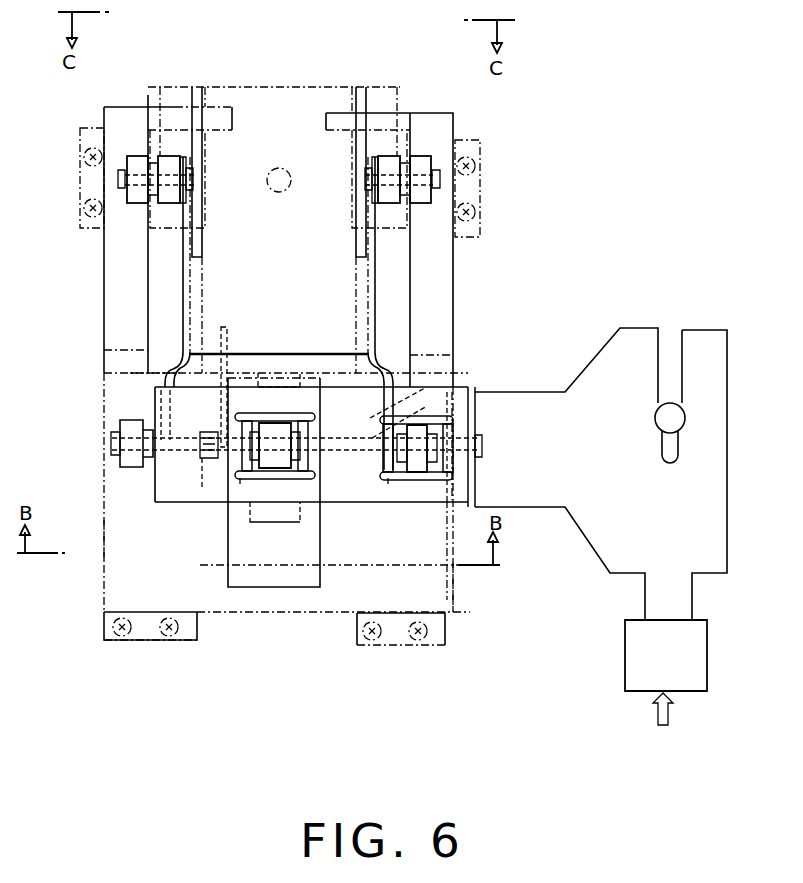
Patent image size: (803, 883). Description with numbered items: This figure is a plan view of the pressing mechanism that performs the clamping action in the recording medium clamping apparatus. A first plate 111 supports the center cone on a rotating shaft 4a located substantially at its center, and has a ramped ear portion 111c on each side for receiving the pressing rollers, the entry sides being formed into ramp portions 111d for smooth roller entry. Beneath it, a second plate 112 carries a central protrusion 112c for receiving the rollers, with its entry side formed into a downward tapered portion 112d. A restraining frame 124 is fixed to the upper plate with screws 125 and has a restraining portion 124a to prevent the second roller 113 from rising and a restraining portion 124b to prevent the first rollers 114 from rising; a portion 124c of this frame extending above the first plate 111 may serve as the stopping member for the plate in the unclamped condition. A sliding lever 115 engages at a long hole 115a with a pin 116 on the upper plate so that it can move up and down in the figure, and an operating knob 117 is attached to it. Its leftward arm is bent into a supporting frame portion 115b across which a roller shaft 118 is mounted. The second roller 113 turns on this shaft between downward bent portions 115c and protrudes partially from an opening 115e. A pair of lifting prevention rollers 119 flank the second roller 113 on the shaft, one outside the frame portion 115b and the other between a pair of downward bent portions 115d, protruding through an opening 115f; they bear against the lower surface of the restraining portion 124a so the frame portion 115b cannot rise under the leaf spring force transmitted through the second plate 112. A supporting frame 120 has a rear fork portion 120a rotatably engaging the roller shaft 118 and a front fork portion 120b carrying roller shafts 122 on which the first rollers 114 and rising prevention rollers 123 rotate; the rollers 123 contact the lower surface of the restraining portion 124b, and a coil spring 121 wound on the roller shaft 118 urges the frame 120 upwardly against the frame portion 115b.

The restraining frame 124 is at (314, 613).
The restraining portion 124a is at (106, 538).
The restraining portion 124b is at (106, 280).
The stopping member portion of restraining frame 124c is at (202, 70).
The screw 125 is at (83, 153).
The first plate 111 is at (311, 90).
The ramped ear portion 111c is at (391, 100).
The ramp portion 111d is at (162, 215).
The rising prevention roller 123 is at (138, 155).
The first roller 114 is at (159, 163).
The roller shaft 122 is at (192, 176).
The front fork portion 120b is at (190, 212).
The supporting frame 120 is at (358, 313).
The rear fork portion 120a is at (158, 397).
The rotating shaft 4a is at (278, 168).
The coil spring 121 is at (229, 329).
The second plate 112 is at (350, 567).
The protrusion 112c is at (272, 371).
The downward tapered portion 112d is at (269, 528).
The downward bent portion 115c is at (252, 431).
The second roller 113 is at (285, 463).
The opening 115e is at (238, 475).
The opening 115f is at (390, 479).
The downward bent portion 115d is at (430, 380).
The supporting frame portion 115b is at (440, 497).
The lifting prevention roller 119 is at (128, 463).
The roller shaft 118 is at (487, 451).
The sliding lever 115 is at (535, 510).
The long hole 115a is at (677, 363).
The pin 116 is at (677, 418).
The operating knob 117 is at (710, 661).